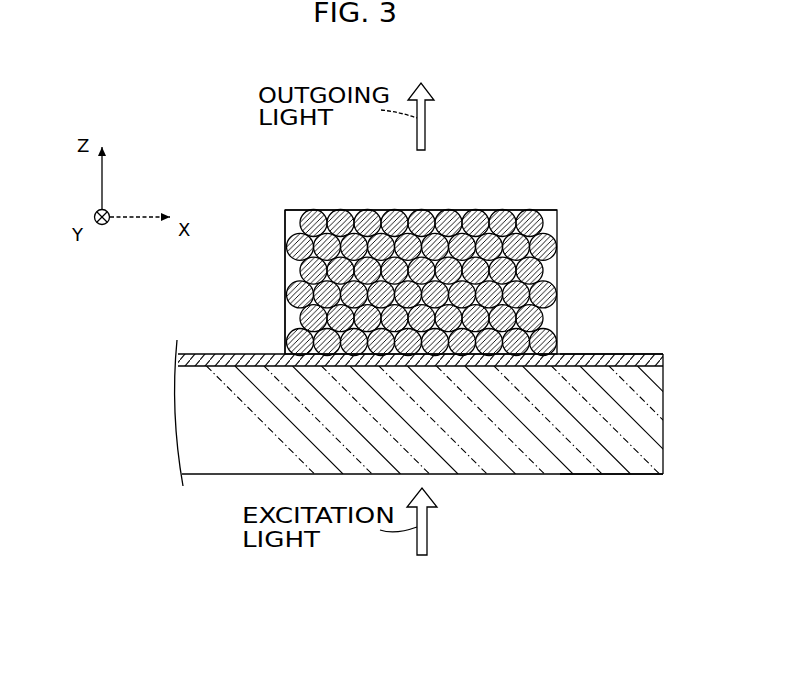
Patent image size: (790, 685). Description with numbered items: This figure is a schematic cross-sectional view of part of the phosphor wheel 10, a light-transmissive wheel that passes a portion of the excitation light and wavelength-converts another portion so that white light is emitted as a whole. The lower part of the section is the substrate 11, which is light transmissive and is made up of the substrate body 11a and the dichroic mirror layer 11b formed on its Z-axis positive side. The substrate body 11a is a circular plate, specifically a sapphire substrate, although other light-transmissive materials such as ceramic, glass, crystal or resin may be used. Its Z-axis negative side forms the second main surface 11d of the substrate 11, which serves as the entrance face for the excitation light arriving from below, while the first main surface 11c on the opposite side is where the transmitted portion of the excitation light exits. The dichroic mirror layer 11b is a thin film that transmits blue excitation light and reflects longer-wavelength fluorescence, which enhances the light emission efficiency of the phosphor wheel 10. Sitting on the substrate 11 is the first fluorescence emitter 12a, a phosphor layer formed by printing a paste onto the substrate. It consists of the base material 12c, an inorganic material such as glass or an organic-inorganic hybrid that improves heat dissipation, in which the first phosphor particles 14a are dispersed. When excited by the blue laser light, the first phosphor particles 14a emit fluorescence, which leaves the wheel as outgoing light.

The phosphor wheel 10 is at (224, 143).
The substrate 11 is at (110, 352).
The substrate body 11a is at (185, 423).
The dichroic mirror layer 11b is at (178, 364).
The first main surface 11c is at (600, 351).
The second main surface 11d is at (607, 476).
The first fluorescence emitter 12a is at (276, 215).
The base material 12c is at (286, 275).
The first phosphor particles 14a is at (450, 213).